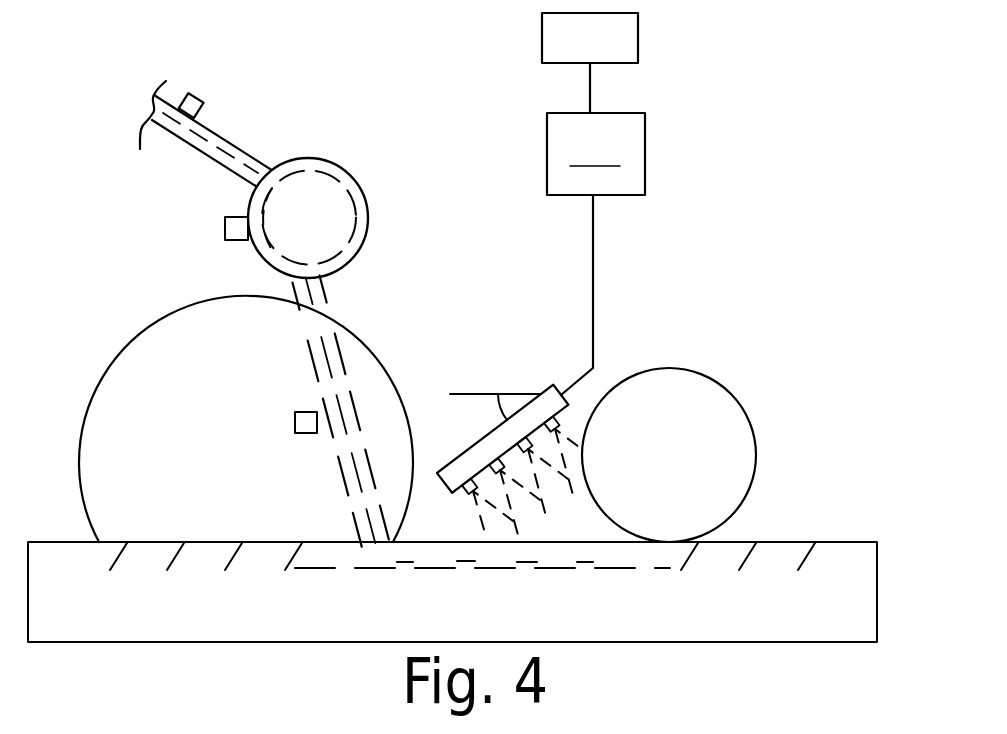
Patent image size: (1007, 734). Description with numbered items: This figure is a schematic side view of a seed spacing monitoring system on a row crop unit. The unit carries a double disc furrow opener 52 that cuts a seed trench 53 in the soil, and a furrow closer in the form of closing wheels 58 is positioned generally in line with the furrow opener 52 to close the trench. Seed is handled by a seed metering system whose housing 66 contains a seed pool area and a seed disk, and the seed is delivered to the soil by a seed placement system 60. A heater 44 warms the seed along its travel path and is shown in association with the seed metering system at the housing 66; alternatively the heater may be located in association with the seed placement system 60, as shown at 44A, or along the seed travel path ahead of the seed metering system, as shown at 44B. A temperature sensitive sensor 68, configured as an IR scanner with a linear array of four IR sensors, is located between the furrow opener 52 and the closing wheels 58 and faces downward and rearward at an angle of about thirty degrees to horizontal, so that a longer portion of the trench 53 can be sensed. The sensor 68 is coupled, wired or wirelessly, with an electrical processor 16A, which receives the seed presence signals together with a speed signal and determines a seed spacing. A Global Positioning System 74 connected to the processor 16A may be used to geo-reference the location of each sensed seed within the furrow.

The heater 44 is at (225, 230).
The heater 44A is at (295, 431).
The heater 44B is at (200, 90).
The double disc furrow opener 52 is at (148, 327).
The seed trench 53 is at (610, 570).
The closing wheels 58 is at (758, 453).
The seed placement system 60 is at (362, 369).
The housing 66 is at (358, 173).
The temperature sensitive sensor 68 is at (441, 470).
The Global Positioning System 74 is at (638, 32).
The electrical processor 16A is at (596, 229).